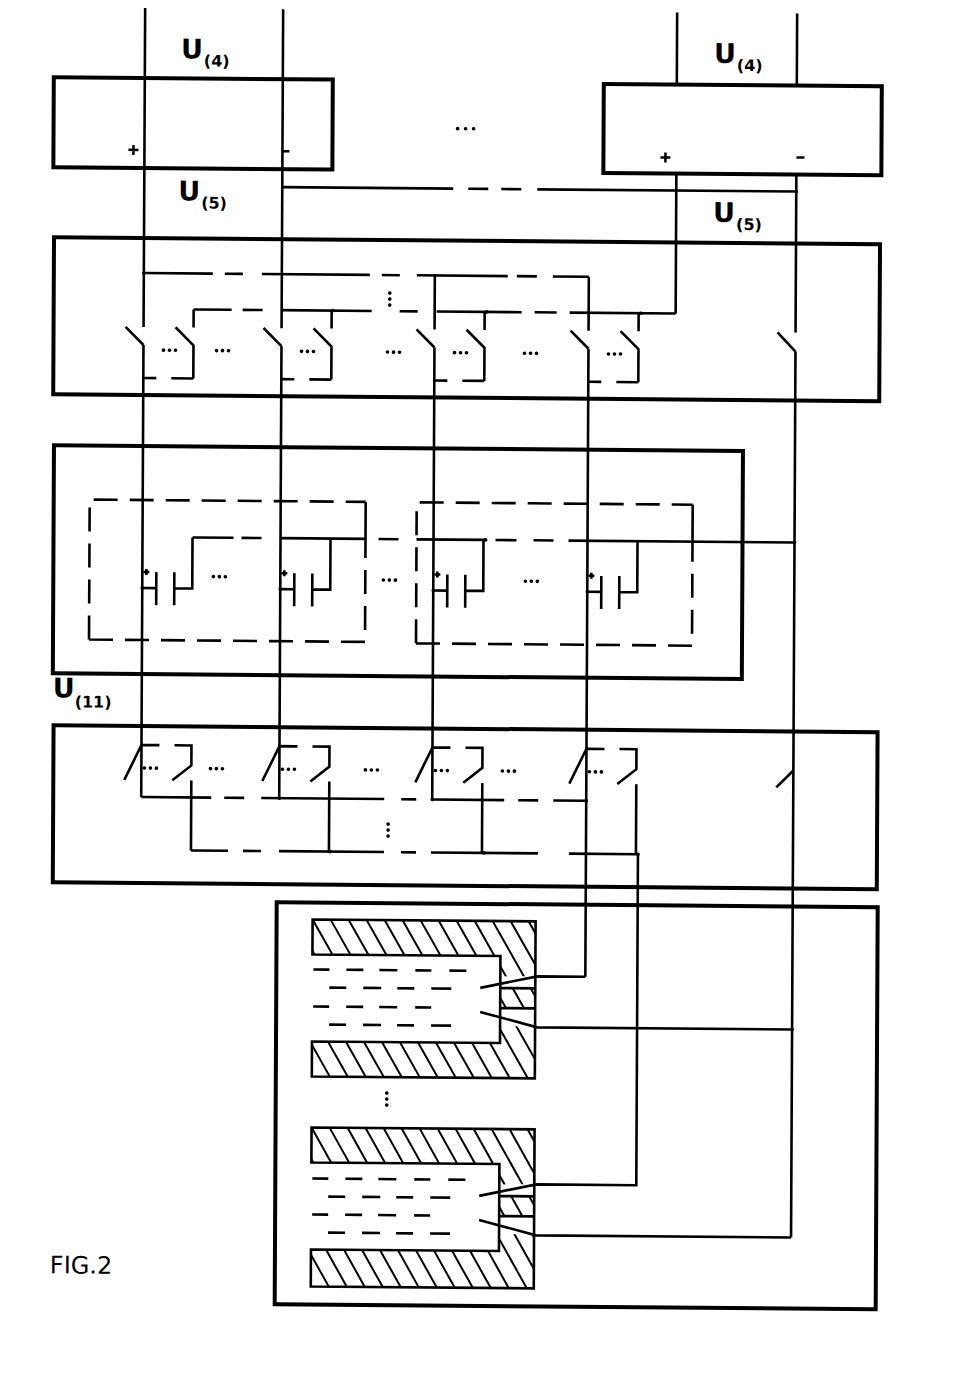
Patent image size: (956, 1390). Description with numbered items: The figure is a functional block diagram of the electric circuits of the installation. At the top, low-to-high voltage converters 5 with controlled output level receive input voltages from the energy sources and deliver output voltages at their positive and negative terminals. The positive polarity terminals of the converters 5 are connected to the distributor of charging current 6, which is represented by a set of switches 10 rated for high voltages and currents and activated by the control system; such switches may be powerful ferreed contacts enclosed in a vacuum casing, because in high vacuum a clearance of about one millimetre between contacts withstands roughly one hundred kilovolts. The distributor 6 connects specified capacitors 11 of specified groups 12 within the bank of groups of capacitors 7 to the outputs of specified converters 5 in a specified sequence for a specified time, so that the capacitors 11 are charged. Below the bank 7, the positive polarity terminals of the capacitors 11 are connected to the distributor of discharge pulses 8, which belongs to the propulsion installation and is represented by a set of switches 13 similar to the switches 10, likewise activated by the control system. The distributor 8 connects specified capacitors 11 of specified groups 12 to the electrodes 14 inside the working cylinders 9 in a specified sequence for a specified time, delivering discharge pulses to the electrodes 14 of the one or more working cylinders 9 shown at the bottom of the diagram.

The low-to-high voltage converters with controlled output level 5 is at (467, 126).
The distributor of charging current 6 is at (466, 319).
The bank of groups of capacitors 7 is at (424, 562).
The distributor of discharge pulses 8 is at (465, 807).
The working cylinders 9 is at (576, 1105).
The switches of distributor of charging current 10 is at (461, 346).
The capacitors 11 is at (398, 578).
The groups of the capacitors 12 is at (391, 573).
The switches of the distributor of discharge pulses 13 is at (440, 800).
The electrodes inside working cylinders 14 is at (507, 1071).